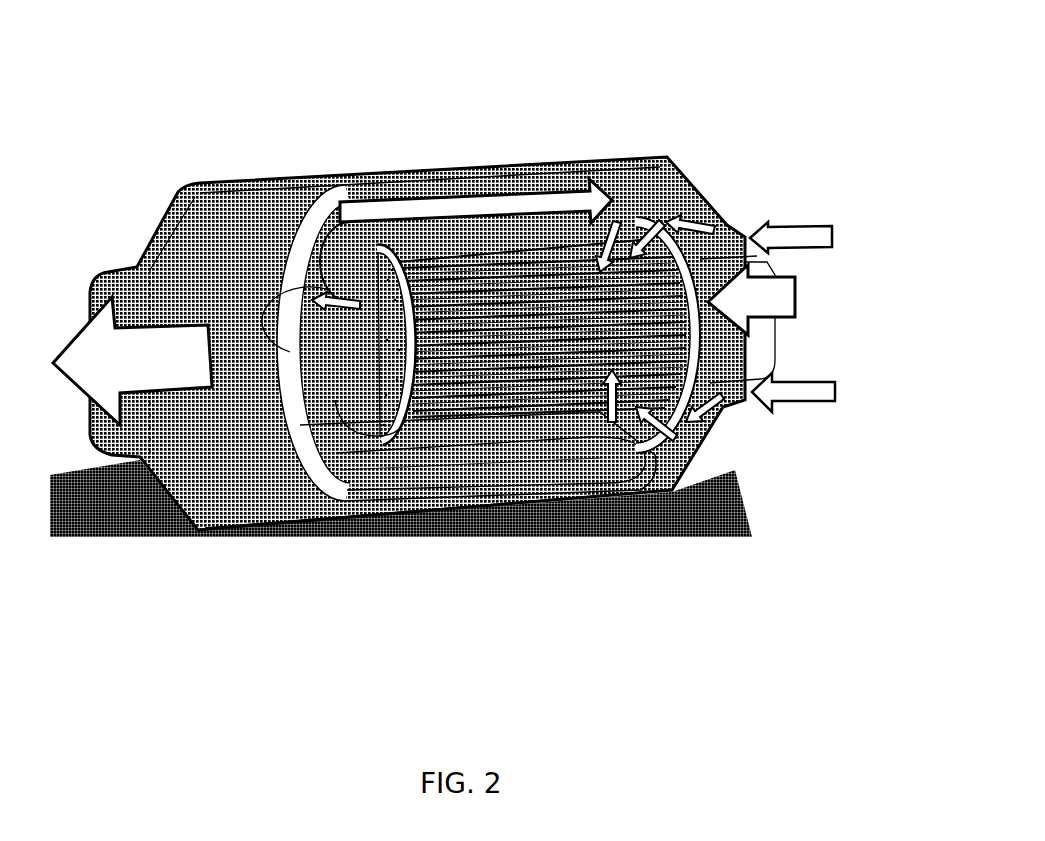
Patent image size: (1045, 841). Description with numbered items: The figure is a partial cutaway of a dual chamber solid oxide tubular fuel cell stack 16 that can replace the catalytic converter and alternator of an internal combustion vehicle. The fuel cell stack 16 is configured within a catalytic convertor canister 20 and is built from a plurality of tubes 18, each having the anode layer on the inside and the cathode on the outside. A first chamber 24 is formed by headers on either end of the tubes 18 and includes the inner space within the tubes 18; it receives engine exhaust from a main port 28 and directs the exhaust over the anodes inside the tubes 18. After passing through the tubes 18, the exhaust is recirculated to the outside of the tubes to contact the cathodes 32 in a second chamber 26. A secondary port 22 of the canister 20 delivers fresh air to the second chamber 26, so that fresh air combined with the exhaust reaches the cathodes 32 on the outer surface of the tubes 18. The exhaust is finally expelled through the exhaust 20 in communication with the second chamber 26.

The dual chamber solid oxide tubular fuel cell stack 16 is at (548, 122).
The tubes 18 is at (528, 415).
The catalytic convertor canister 20 is at (90, 308).
The secondary port 22 is at (836, 393).
The first chamber 24 is at (362, 352).
The second chamber 26 is at (478, 436).
The main port 28 is at (798, 303).
The cathodes 32 is at (478, 253).